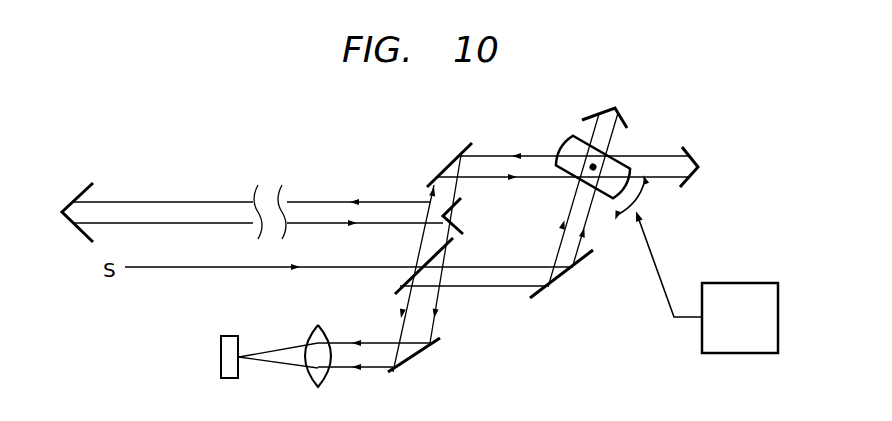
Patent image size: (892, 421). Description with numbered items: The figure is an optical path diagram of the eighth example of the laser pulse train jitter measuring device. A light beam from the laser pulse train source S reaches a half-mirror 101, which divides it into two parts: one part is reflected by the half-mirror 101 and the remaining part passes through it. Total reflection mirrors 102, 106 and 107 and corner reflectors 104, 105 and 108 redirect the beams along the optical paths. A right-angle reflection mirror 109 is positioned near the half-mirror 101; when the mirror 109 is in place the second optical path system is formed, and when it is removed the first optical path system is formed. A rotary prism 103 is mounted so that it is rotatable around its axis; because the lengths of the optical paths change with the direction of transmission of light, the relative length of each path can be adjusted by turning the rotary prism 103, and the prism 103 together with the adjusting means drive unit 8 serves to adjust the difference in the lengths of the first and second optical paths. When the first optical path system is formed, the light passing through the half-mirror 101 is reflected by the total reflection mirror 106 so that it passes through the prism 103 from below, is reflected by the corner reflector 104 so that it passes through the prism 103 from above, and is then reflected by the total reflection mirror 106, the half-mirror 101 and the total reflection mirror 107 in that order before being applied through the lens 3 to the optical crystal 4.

The lens 3 is at (315, 325).
The optical crystal 4 is at (230, 335).
The drive unit 8 is at (761, 283).
The half-mirror 101 is at (397, 290).
The total reflection mirror 102 is at (448, 166).
The rotary prism 103 is at (560, 142).
The corner reflector 104 is at (627, 127).
The corner reflector 105 is at (690, 152).
The total reflection mirror 106 is at (577, 258).
The total reflection mirror 107 is at (423, 352).
The corner reflector 108 is at (85, 185).
The right-angle reflection mirror 109 is at (462, 196).